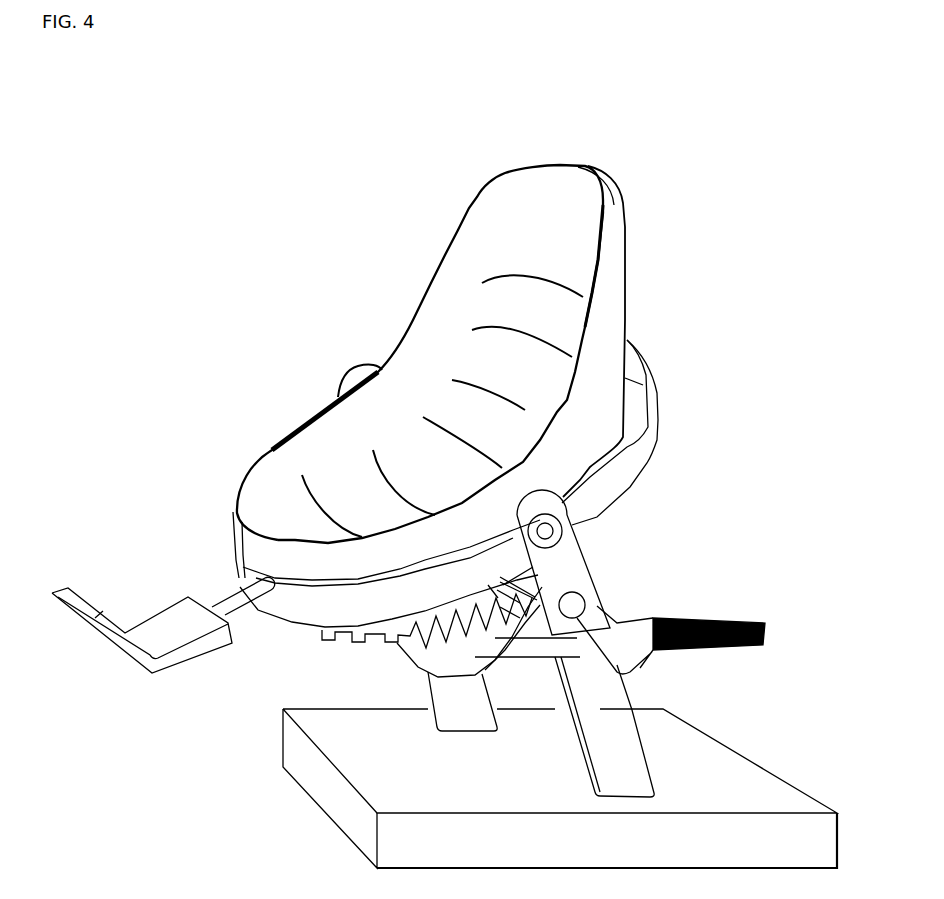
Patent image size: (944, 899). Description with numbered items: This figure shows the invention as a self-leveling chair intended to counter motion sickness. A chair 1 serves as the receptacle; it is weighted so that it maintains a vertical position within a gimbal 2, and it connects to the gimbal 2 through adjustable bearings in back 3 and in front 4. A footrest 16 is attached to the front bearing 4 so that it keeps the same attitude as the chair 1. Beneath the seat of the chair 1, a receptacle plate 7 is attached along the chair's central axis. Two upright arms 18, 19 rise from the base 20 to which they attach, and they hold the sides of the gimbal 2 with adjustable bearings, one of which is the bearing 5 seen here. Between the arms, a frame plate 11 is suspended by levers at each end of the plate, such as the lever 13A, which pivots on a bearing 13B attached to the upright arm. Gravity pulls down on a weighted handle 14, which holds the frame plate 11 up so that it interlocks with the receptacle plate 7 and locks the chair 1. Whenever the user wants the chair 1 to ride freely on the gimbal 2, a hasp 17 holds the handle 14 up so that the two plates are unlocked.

The chair 1 is at (498, 224).
The gimbal 2 is at (648, 440).
The back bearing 3 is at (597, 163).
The front bearing 4 is at (226, 591).
The adjustable bearing 5 is at (552, 532).
The receptacle plate 7 is at (363, 639).
The frame plate 11 is at (423, 664).
The lever 13A is at (626, 637).
The bearing 13B is at (567, 654).
The weighted handle 14 is at (766, 639).
The footrest 16 is at (151, 673).
The hasp 17 is at (629, 674).
The upright arm 18 is at (457, 713).
The upright arm 19 is at (628, 767).
The base 20 is at (351, 767).